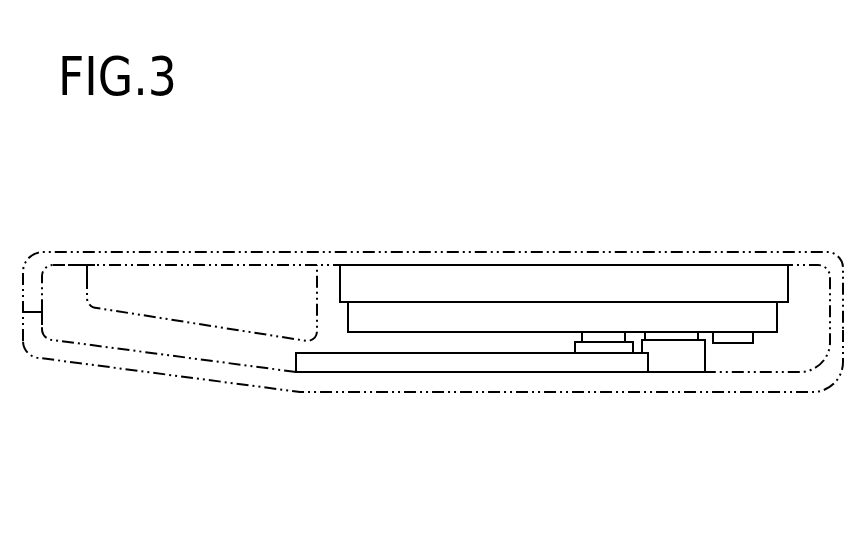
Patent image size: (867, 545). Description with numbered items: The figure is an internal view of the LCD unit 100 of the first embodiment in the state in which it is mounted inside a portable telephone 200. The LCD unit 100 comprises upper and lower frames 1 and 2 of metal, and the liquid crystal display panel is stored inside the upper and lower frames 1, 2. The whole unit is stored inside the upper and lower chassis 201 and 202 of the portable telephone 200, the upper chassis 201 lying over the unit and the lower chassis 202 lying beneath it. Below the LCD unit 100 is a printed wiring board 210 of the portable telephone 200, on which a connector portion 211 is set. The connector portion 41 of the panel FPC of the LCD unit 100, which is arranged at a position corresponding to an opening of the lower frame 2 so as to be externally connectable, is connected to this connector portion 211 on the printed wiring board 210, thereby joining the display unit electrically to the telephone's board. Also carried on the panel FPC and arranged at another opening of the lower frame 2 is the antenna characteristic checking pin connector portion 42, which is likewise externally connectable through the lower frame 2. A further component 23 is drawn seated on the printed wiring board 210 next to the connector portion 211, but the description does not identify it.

The portable telephone 200 is at (222, 226).
The upper chassis 201 is at (353, 251).
The lower chassis 202 is at (353, 392).
The LCD unit 100 is at (518, 264).
The upper frame 1 is at (682, 285).
The lower frame 2 is at (730, 315).
The printed wiring board 210 is at (490, 362).
The connector portion 211 is at (605, 350).
The connector portion 41 is at (602, 338).
The electronic component 23 is at (675, 337).
The antenna characteristic checking pin connector portion 42 is at (735, 338).